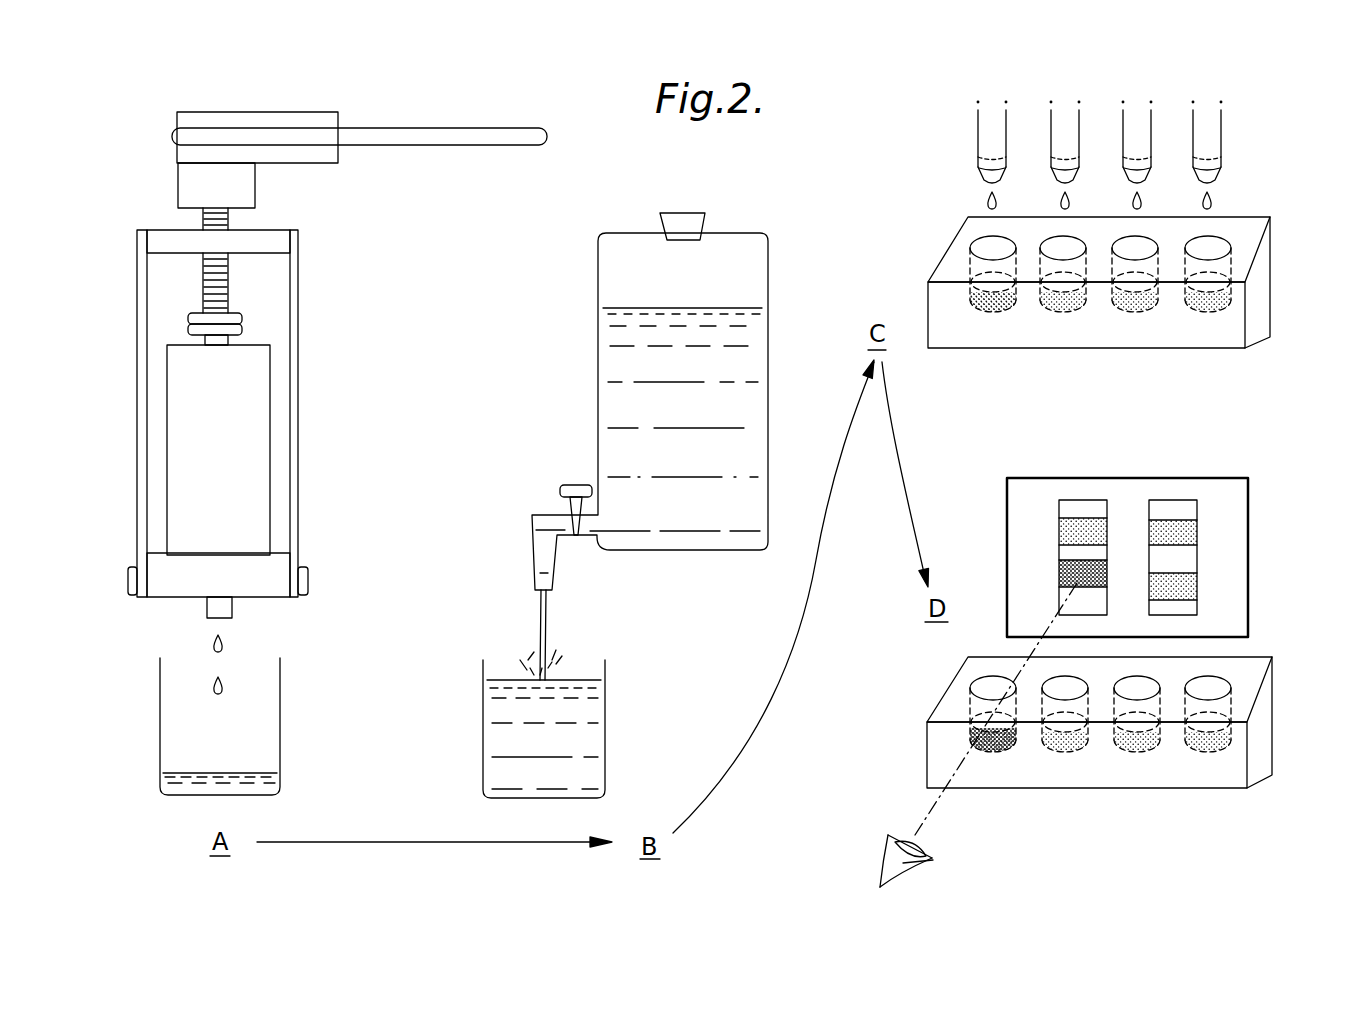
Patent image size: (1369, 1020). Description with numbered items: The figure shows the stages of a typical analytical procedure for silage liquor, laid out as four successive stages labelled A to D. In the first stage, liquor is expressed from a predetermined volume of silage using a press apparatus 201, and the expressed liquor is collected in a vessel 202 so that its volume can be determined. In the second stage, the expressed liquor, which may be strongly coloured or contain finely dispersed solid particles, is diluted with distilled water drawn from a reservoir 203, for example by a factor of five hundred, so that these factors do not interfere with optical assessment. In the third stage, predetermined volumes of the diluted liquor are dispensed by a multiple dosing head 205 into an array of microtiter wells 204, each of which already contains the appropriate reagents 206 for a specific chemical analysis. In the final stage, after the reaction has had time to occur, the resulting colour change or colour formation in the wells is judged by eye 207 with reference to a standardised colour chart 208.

The apparatus 201 is at (295, 412).
The vessel 202 is at (168, 717).
The reservoir 203 is at (598, 270).
The microtiter wells 204 is at (1140, 246).
The multiple dosing head 205 is at (1058, 130).
The reagents 206 is at (1006, 312).
The eye 207 is at (913, 870).
The standardised colour chart 208 is at (1250, 584).